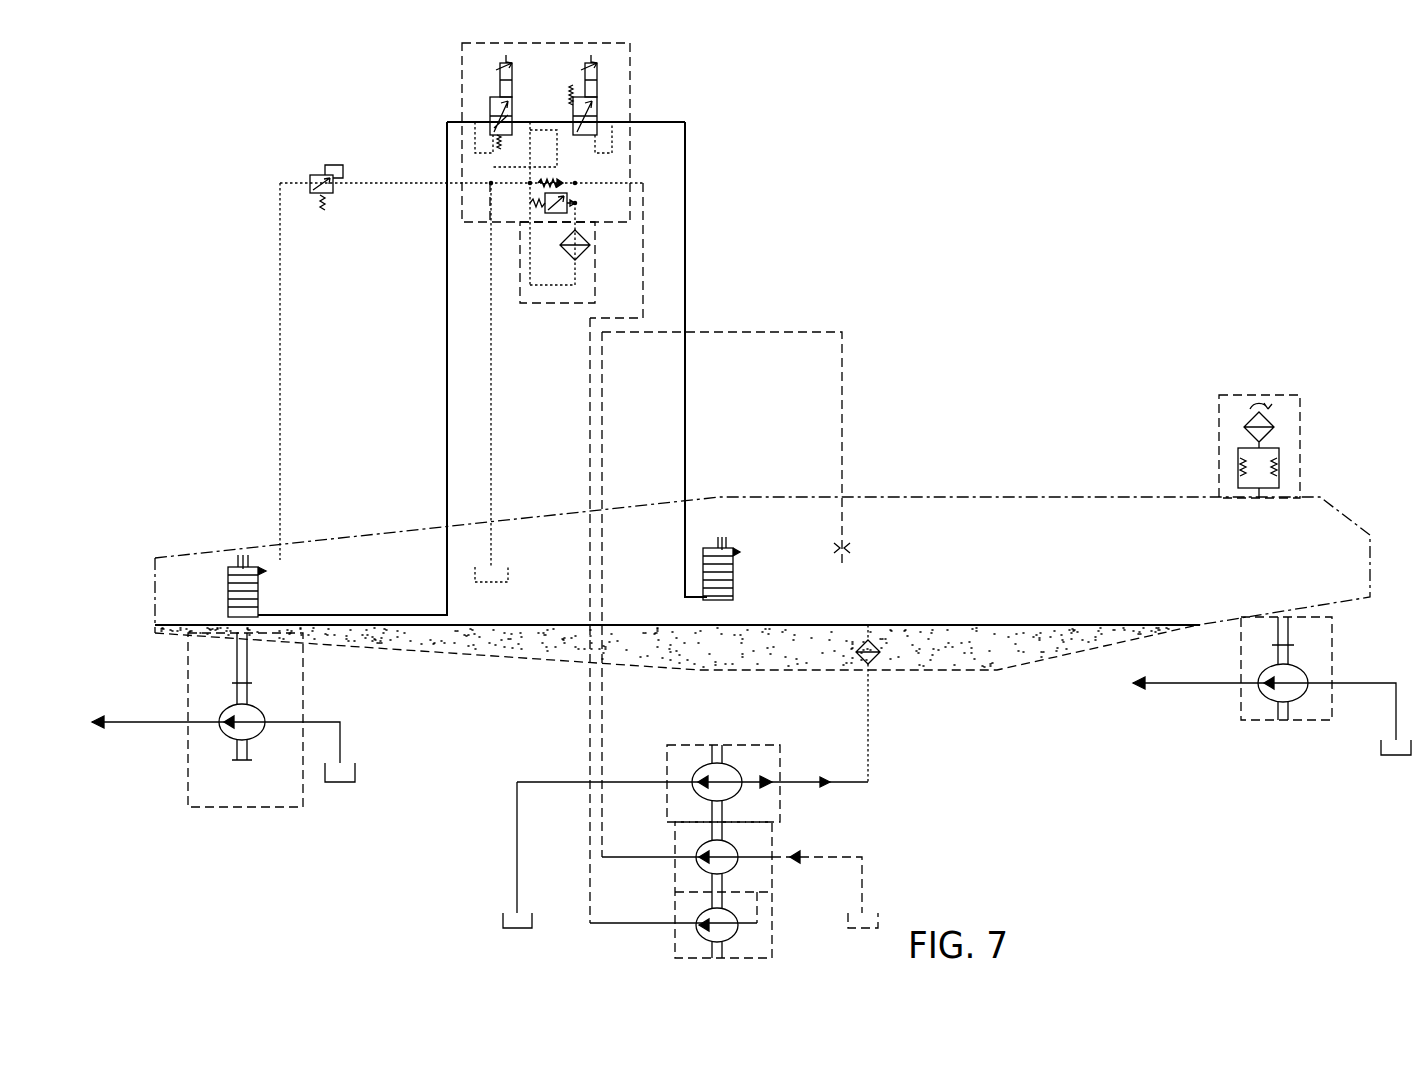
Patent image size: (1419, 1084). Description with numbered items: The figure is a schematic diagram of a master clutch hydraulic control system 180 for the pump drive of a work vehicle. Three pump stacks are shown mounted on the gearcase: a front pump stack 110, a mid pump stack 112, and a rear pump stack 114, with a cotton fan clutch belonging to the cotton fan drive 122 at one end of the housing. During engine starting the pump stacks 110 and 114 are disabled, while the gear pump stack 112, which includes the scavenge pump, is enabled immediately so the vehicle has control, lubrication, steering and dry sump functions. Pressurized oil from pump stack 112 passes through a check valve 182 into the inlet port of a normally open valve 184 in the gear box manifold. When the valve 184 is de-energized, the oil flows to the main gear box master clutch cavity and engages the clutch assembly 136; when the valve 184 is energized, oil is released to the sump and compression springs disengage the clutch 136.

The master clutch hydraulic control system 180 is at (1100, 197).
The normally open valve 184 is at (606, 88).
The check valve 182 is at (584, 201).
The clutch assembly 136 is at (750, 532).
The cotton fan drive 122 is at (222, 551).
The front pump stack support 110 is at (158, 838).
The mid pump stack support 112 is at (524, 951).
The rear pump stack support 114 is at (1213, 780).